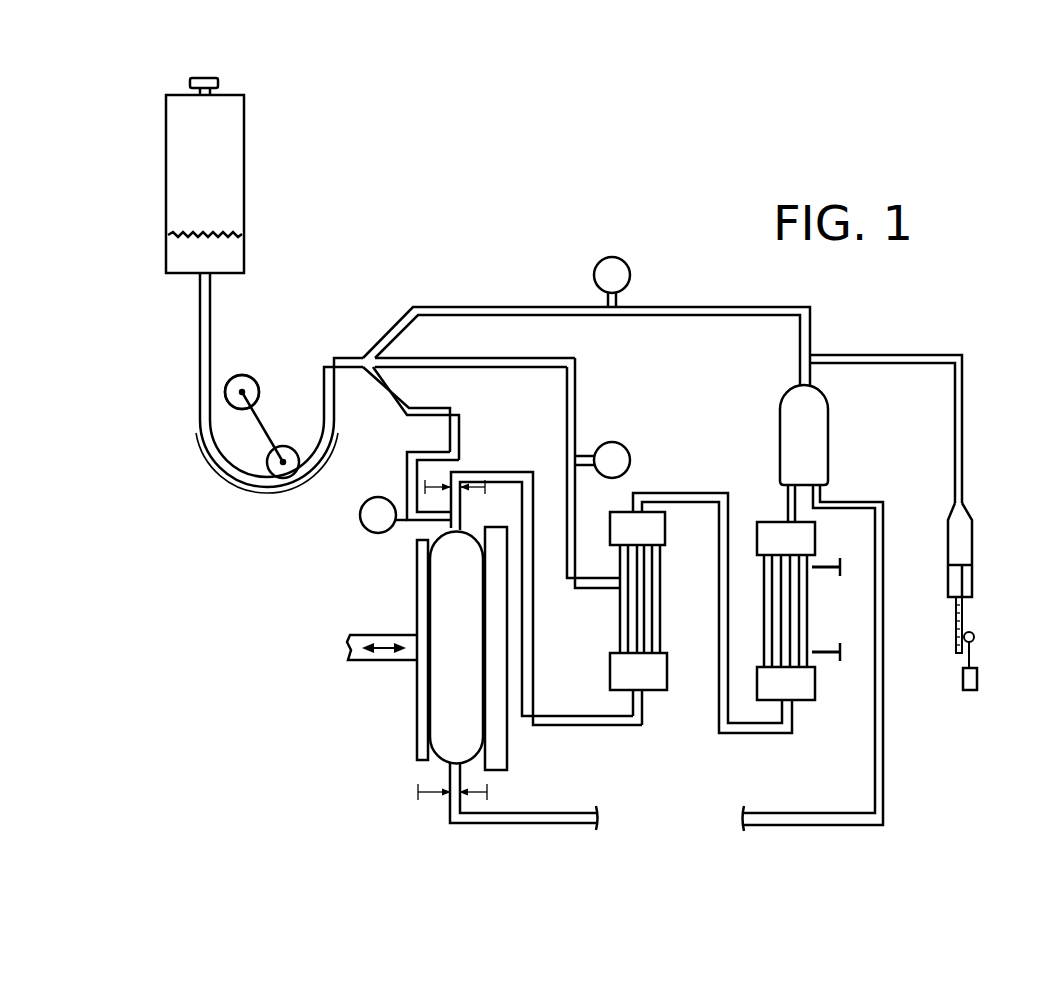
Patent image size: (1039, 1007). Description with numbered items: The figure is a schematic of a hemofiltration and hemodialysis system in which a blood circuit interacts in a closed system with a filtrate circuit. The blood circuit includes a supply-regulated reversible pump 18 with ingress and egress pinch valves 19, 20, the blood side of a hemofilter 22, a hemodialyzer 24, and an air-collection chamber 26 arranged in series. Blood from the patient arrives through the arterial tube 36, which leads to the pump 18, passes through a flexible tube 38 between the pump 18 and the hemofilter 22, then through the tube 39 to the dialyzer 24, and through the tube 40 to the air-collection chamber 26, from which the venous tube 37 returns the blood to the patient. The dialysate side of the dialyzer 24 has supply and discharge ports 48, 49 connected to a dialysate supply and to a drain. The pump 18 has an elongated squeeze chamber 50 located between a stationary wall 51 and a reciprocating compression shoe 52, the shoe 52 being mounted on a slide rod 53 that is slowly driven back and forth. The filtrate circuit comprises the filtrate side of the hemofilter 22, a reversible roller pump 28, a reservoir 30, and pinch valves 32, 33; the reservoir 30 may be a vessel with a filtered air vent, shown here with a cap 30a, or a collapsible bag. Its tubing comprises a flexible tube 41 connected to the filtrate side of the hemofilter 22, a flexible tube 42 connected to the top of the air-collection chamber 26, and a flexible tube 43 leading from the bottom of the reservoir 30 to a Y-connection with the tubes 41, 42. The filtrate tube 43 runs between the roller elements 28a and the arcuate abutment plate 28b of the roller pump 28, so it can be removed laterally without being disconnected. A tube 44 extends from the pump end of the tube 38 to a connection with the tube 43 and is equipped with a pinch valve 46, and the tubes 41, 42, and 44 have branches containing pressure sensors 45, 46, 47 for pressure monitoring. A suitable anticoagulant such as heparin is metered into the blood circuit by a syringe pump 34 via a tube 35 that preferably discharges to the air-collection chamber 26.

The reversible pump 18 is at (406, 583).
The ingress pinch valve 19 is at (492, 792).
The egress pinch valve 20 is at (473, 481).
The hemofilter 22 is at (661, 592).
The hemodialyzer 24 is at (762, 600).
The air-collection chamber 26 is at (777, 452).
The reversible roller pump 28 is at (268, 423).
The roller elements 28a is at (243, 375).
The arcuate abutment plate 28b is at (233, 489).
The reservoir 30 is at (244, 160).
The reservoir cap 30a is at (220, 83).
The pinch valve 32 is at (434, 353).
The pinch valve 33 is at (417, 433).
The syringe pump 34 is at (977, 574).
The tube 35 is at (963, 400).
The arterial tube 36 is at (525, 824).
The venous tube 37 is at (765, 826).
The flexible tube 38 is at (540, 632).
The tube 39 is at (673, 491).
The tube 40 is at (787, 500).
The flexible tube 41 is at (578, 408).
The flexible tube 42 is at (772, 307).
The flexible tube 43 is at (200, 353).
The tube 44 is at (407, 458).
The pressure sensor 45 is at (627, 447).
The pinch valve 46 is at (630, 266).
The pressure sensor 47 is at (365, 500).
The supply port 48 is at (822, 570).
The discharge port 49 is at (822, 648).
The squeeze chamber 50 is at (442, 746).
The stationary wall 51 is at (482, 572).
The compression shoe 52 is at (415, 717).
The slide rod 53 is at (345, 652).